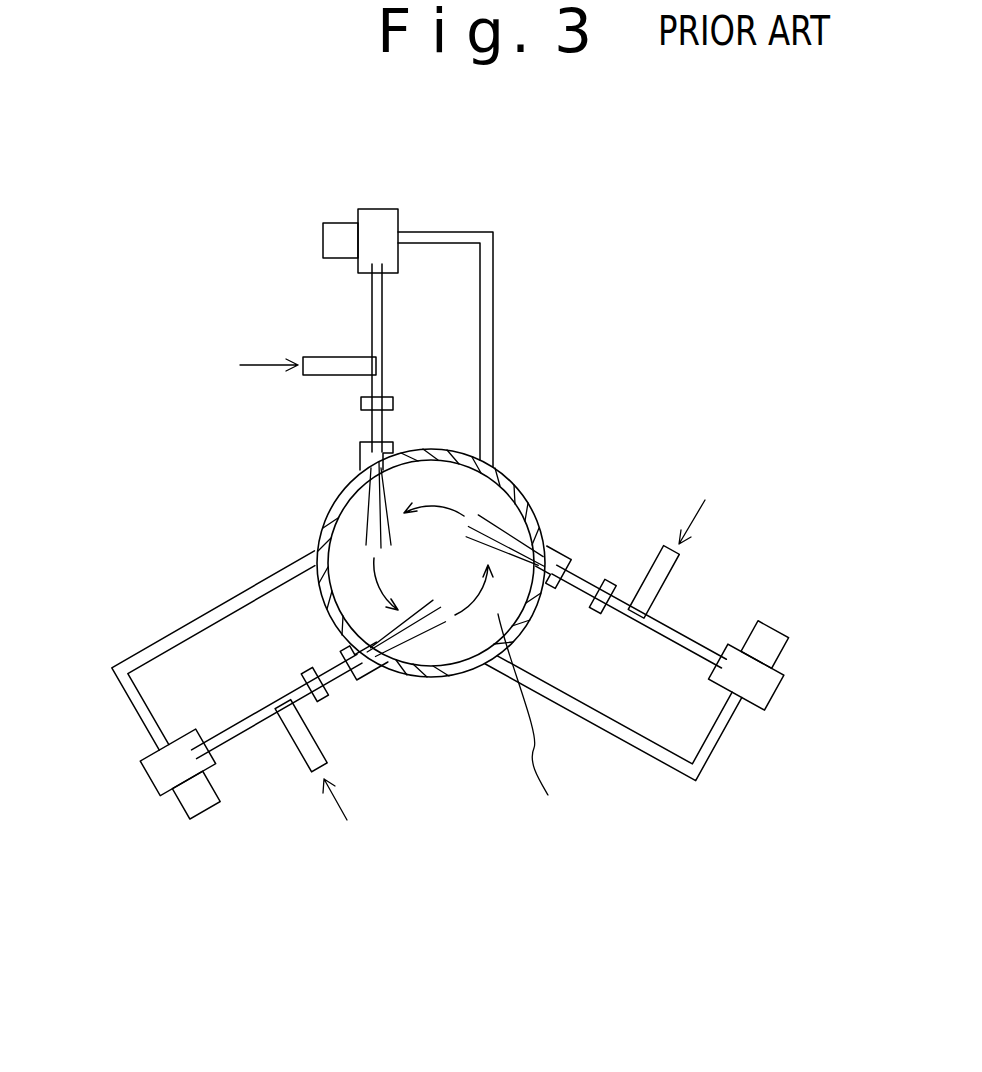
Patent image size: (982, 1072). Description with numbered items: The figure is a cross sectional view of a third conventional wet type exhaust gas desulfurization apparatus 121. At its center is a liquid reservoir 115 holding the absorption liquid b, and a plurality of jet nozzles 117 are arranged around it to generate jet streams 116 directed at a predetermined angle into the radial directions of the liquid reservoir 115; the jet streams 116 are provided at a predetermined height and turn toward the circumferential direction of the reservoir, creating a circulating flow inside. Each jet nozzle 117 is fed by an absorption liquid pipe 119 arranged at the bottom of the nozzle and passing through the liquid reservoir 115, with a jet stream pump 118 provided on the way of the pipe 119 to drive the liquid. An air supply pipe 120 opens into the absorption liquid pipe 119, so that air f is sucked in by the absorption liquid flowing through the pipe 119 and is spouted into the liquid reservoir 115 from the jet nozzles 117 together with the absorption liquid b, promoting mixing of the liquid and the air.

The liquid reservoir 115 is at (330, 527).
The jet stream 116 is at (325, 543).
The jet nozzle 117 is at (370, 425).
The jet stream pump 118 is at (378, 218).
The absorption liquid pipe 119 is at (372, 300).
The air supply pipe 120 is at (337, 357).
The wet type exhaust gas desulfurization apparatus 121 is at (697, 297).